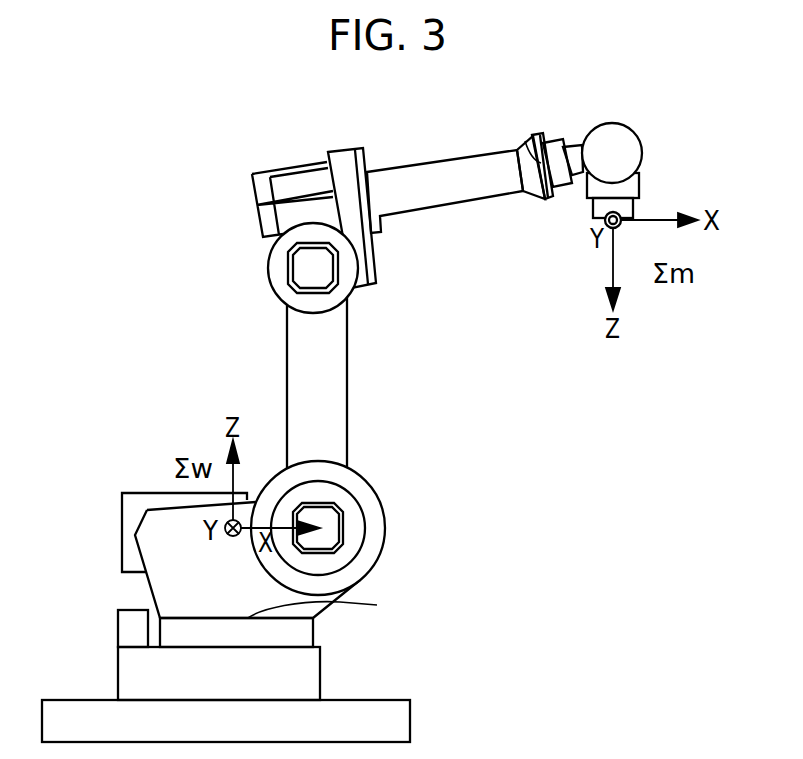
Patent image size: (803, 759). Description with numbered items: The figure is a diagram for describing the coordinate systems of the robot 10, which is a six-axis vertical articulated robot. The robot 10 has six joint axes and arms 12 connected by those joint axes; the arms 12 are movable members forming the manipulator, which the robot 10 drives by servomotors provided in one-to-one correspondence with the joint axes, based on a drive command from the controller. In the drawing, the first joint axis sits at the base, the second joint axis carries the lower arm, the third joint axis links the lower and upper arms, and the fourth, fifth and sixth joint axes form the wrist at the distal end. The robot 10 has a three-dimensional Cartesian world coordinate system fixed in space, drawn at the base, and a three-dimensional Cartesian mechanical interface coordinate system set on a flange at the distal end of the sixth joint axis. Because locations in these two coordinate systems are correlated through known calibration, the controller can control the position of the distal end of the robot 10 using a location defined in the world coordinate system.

The robot 10 is at (106, 170).
The arms 12 is at (427, 177).